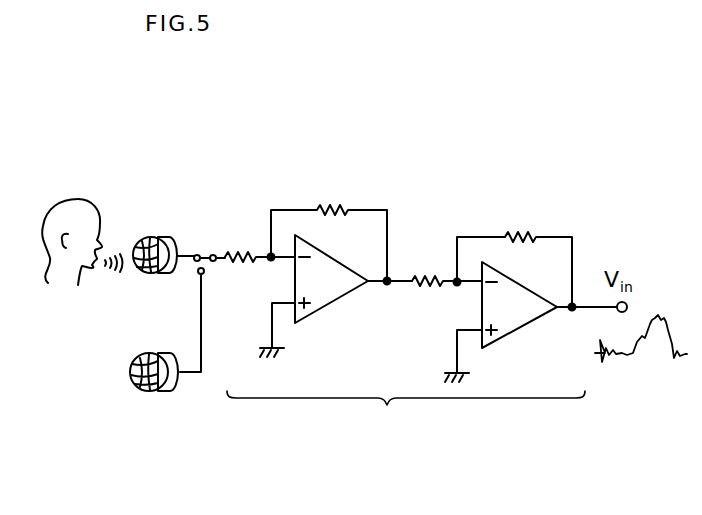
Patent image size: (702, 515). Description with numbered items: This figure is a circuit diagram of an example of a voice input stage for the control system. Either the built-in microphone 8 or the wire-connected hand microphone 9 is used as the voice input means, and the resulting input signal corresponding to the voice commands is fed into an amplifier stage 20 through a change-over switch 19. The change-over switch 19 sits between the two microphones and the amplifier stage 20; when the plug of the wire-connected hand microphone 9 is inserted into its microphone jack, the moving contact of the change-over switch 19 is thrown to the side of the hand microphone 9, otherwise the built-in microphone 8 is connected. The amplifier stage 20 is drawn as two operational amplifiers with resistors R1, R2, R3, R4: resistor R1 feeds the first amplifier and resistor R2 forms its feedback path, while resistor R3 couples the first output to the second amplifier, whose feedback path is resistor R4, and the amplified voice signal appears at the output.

The built-in microphone 8 is at (158, 237).
The wire-connected hand microphone 9 is at (151, 396).
The change-over switch 19 is at (205, 251).
The amplifier stage 20 is at (421, 302).
The resistor R1 is at (232, 249).
The feedback resistor R2 is at (324, 207).
The resistor R3 is at (417, 285).
The feedback resistor R4 is at (527, 232).